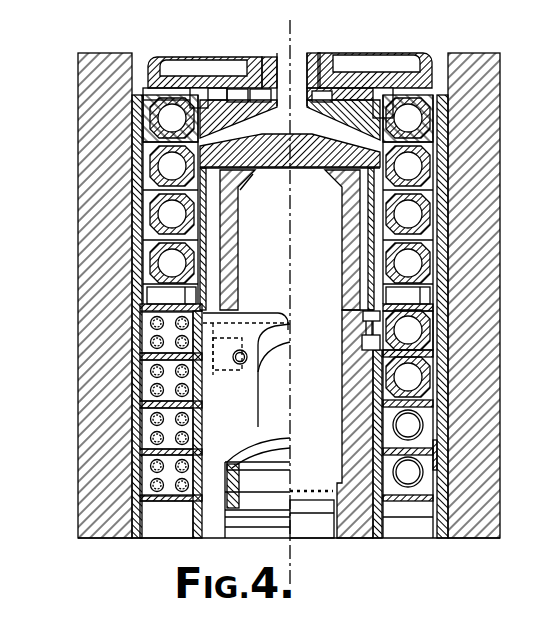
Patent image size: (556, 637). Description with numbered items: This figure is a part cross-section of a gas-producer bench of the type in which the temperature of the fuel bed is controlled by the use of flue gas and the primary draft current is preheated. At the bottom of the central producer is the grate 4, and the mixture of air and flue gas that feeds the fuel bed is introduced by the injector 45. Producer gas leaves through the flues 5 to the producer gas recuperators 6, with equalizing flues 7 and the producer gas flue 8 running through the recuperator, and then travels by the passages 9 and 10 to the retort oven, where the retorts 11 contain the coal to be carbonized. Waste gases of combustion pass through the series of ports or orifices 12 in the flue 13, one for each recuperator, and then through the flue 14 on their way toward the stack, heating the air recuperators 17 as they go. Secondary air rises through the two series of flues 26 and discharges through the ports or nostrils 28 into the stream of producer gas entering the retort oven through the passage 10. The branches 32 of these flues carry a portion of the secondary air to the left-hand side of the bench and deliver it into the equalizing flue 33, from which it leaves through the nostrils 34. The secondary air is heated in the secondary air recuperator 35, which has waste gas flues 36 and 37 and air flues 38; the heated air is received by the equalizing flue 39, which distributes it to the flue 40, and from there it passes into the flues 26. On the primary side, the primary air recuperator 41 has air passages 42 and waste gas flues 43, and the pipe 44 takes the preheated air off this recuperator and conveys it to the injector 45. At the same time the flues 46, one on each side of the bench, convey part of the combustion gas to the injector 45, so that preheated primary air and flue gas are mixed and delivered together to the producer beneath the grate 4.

The grate 4 is at (290, 496).
The flues 5 is at (296, 354).
The producer gas recuperators 6 is at (140, 198).
The equalizing flues 7 is at (250, 181).
The producer gas flue 8 is at (135, 139).
The passage 9 is at (290, 150).
The passage 10 is at (291, 84).
The retorts 11 is at (290, 70).
The ports or orifices 12 is at (268, 103).
The flue 13 is at (290, 118).
The flue 14 is at (290, 166).
The air recuperators 17 is at (286, 299).
The flues 26 is at (350, 130).
The ports or nostrils 28 is at (341, 95).
The branches of flues 32 is at (238, 119).
The equalizing flue 33 is at (237, 95).
The nostrils 34 is at (260, 95).
The secondary air recuperator 35 is at (437, 436).
The waste gas flue 36 is at (408, 377).
The waste gas flue 37 is at (408, 425).
The air flues 38 is at (437, 463).
The equalizing flue 39 is at (362, 344).
The flue 40 is at (363, 317).
The primary air recuperator 41 is at (143, 370).
The air passages 42 is at (143, 455).
The waste gas flues 43 is at (147, 475).
The pipe 44 is at (256, 322).
The injector 45 is at (258, 397).
The flues 46 is at (230, 354).